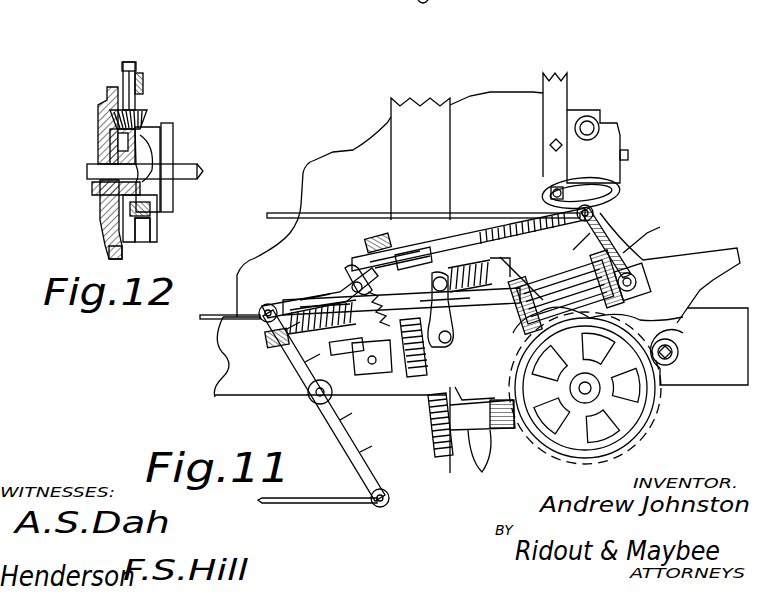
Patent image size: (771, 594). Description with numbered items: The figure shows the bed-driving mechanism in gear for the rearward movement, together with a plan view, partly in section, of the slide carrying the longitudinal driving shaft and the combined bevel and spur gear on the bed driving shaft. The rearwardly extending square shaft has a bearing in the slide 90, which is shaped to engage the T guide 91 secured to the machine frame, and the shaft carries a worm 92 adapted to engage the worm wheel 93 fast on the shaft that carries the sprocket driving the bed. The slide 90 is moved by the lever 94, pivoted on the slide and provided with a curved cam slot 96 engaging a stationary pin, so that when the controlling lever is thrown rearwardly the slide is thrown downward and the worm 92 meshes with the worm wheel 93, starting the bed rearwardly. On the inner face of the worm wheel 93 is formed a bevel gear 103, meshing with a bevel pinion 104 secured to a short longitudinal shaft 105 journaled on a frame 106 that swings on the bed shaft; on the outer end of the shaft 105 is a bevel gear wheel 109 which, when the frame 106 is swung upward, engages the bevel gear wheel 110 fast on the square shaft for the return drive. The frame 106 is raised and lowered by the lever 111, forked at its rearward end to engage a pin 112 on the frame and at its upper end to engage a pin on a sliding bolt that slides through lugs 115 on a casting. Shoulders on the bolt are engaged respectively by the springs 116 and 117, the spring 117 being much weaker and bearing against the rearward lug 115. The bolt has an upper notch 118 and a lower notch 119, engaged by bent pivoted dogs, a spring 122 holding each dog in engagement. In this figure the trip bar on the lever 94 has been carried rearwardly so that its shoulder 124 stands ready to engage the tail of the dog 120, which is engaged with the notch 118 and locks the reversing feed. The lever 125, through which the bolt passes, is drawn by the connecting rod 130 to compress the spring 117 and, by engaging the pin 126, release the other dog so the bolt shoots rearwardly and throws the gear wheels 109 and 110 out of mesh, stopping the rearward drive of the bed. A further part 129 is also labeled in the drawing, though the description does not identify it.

In FIG. 12, the slide 90 is at (153, 140).
In FIG. 11, the slide 90 is at (640, 260).
In FIG. 12, the T guide 91 is at (166, 160).
In FIG. 11, the T guide 91 is at (620, 230).
In FIG. 11, the worm 92 is at (710, 280).
In FIG. 12, the worm wheel 93 is at (99, 122).
In FIG. 11, the worm wheel 93 is at (620, 413).
In FIG. 12, the lever 94 is at (160, 217).
In FIG. 11, the lever 94 is at (608, 213).
In FIG. 11, the curved cam slot 96 is at (613, 176).
In FIG. 12, the bevel gear 103 is at (107, 237).
In FIG. 12, the bevel pinion 104 is at (143, 110).
In FIG. 12, the short longitudinal shaft 105 is at (130, 64).
In FIG. 12, the frame 106 is at (120, 78).
In FIG. 11, the bevel gear wheel 109 is at (448, 455).
In FIG. 11, the bevel gear wheel 110 is at (389, 498).
In FIG. 11, the lever 111 is at (401, 301).
In FIG. 11, the pin 112 is at (497, 433).
In FIG. 11, the lugs 115 is at (480, 233).
In FIG. 11, the spring 116 is at (500, 235).
In FIG. 11, the spring 117 is at (303, 307).
In FIG. 11, the notch 118 is at (427, 250).
In FIG. 11, the notch 119 is at (395, 365).
In FIG. 11, the dog 120 is at (373, 245).
In FIG. 11, the spring 122 is at (347, 290).
In FIG. 11, the shoulder 124 is at (410, 258).
In FIG. 11, the lever 125 is at (335, 420).
In FIG. 11, the pin 126 is at (415, 385).
In FIG. 11, the rod 129 is at (223, 319).
In FIG. 11, the connecting rod 130 is at (297, 503).